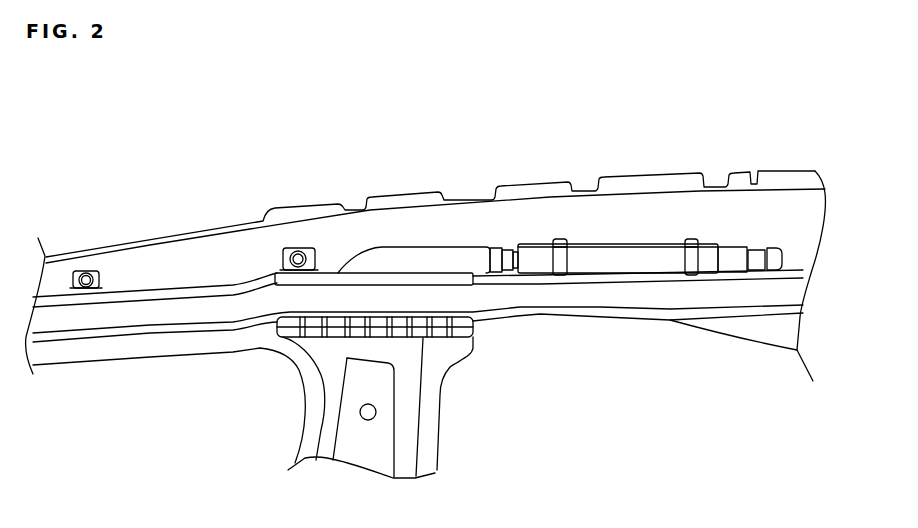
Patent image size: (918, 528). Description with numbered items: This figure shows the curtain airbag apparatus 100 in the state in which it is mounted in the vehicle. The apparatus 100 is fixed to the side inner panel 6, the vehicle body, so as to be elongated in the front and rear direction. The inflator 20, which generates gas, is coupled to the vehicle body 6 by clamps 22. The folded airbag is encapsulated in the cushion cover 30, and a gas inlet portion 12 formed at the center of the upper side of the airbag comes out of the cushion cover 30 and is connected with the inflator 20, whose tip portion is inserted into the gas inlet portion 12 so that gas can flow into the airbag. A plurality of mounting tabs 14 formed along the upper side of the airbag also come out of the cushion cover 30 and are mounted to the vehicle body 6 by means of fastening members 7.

The curtain airbag apparatus 100 is at (400, 222).
The side inner panel 6 is at (640, 207).
The fastening member 7 is at (86, 272).
The gas inlet portion 12 is at (470, 258).
The mounting tab 14 is at (94, 271).
The inflator 20 is at (652, 255).
The clamp 22 is at (558, 257).
The cushion cover 30 is at (628, 303).